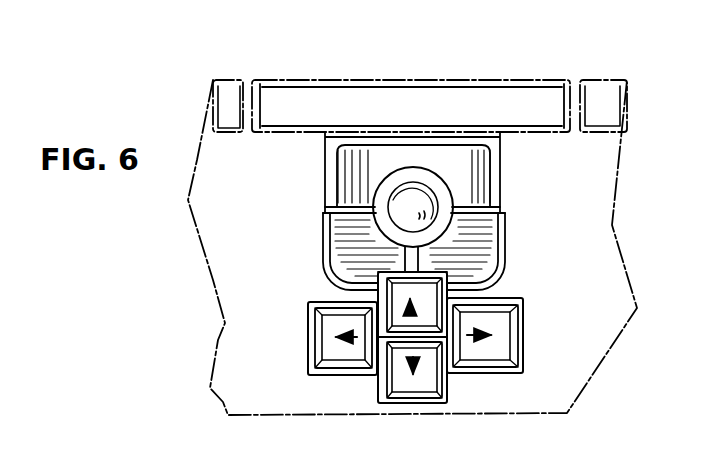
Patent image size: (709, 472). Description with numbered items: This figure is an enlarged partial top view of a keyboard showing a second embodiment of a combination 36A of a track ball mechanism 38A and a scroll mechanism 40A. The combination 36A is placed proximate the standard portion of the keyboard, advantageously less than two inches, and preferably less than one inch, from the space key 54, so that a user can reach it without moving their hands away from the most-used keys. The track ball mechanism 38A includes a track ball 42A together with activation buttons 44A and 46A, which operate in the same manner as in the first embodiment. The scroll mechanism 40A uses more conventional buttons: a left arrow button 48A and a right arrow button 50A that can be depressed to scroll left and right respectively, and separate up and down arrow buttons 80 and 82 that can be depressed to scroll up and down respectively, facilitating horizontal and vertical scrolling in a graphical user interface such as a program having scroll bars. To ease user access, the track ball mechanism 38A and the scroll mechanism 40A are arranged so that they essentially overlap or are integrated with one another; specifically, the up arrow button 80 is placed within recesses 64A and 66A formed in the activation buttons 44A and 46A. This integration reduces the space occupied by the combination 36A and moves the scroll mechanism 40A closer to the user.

The combination 36A is at (286, 387).
The space key 54 is at (508, 92).
The track ball mechanism 38A is at (321, 203).
The track ball 42A is at (418, 200).
The activation button 44A is at (332, 252).
The activation button 46A is at (484, 235).
The recess 64A is at (336, 288).
The recess 66A is at (489, 294).
The scroll mechanism 40A is at (473, 353).
The left arrow button 48A is at (311, 306).
The right arrow button 50A is at (518, 323).
The up arrow button 80 is at (395, 317).
The down arrow button 82 is at (428, 382).